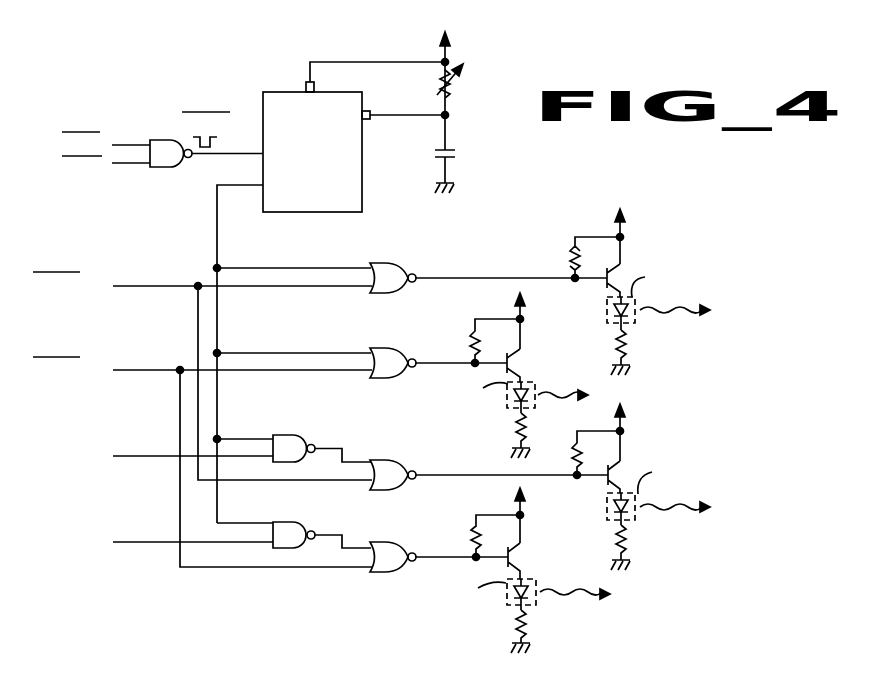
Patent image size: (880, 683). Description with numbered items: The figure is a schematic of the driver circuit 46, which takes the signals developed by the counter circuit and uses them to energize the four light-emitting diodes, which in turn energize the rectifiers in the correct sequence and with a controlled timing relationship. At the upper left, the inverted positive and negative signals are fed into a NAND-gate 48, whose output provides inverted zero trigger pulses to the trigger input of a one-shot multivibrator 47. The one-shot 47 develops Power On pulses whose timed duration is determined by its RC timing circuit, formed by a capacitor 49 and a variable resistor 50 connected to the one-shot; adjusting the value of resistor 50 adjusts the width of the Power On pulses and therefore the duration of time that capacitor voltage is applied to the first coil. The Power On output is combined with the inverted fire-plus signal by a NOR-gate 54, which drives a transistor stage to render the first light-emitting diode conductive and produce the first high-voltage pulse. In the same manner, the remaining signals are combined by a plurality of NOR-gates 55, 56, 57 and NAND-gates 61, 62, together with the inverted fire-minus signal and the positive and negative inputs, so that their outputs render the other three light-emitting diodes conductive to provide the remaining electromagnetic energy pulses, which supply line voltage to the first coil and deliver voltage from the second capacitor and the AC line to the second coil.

The driver circuit 46 is at (514, 205).
The one-shot multivibrator 47 is at (342, 205).
The NAND-gate 48 is at (176, 166).
The capacitor 49 is at (445, 150).
The variable resistor 50 is at (441, 86).
The NOR-gate 54 is at (390, 267).
The NOR-gate 55 is at (393, 351).
The NOR-gate 56 is at (388, 461).
The NOR-gate 57 is at (382, 544).
The NAND-gate 61 is at (288, 438).
The NAND-gate 62 is at (288, 524).